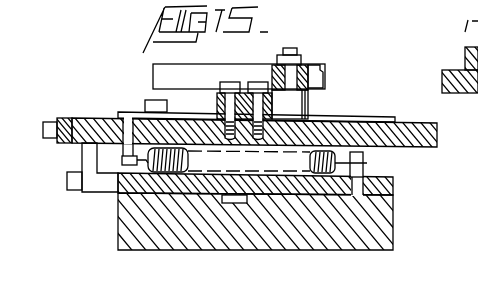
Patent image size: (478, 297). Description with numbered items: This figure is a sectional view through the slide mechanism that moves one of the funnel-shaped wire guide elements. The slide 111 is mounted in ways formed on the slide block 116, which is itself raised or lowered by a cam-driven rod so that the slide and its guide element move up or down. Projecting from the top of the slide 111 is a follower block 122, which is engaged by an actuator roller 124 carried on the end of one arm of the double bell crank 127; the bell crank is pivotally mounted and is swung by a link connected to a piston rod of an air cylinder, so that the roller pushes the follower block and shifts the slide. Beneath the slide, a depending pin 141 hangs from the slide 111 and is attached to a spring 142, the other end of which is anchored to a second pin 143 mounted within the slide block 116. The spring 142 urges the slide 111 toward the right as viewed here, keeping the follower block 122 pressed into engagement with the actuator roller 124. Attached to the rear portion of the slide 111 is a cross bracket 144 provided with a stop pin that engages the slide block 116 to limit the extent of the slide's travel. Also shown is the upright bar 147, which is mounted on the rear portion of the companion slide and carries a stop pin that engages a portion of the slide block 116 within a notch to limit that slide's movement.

The slide 111 is at (425, 133).
The slide block 116 is at (382, 221).
The follower block 122 is at (217, 99).
The actuator roller 124 is at (308, 110).
The double bell crank 127 is at (255, 68).
The depending pin 141 is at (123, 128).
The spring 142 is at (325, 155).
The second pin 143 is at (365, 171).
The cross bracket 144 is at (67, 104).
The upright bar 147 is at (90, 154).